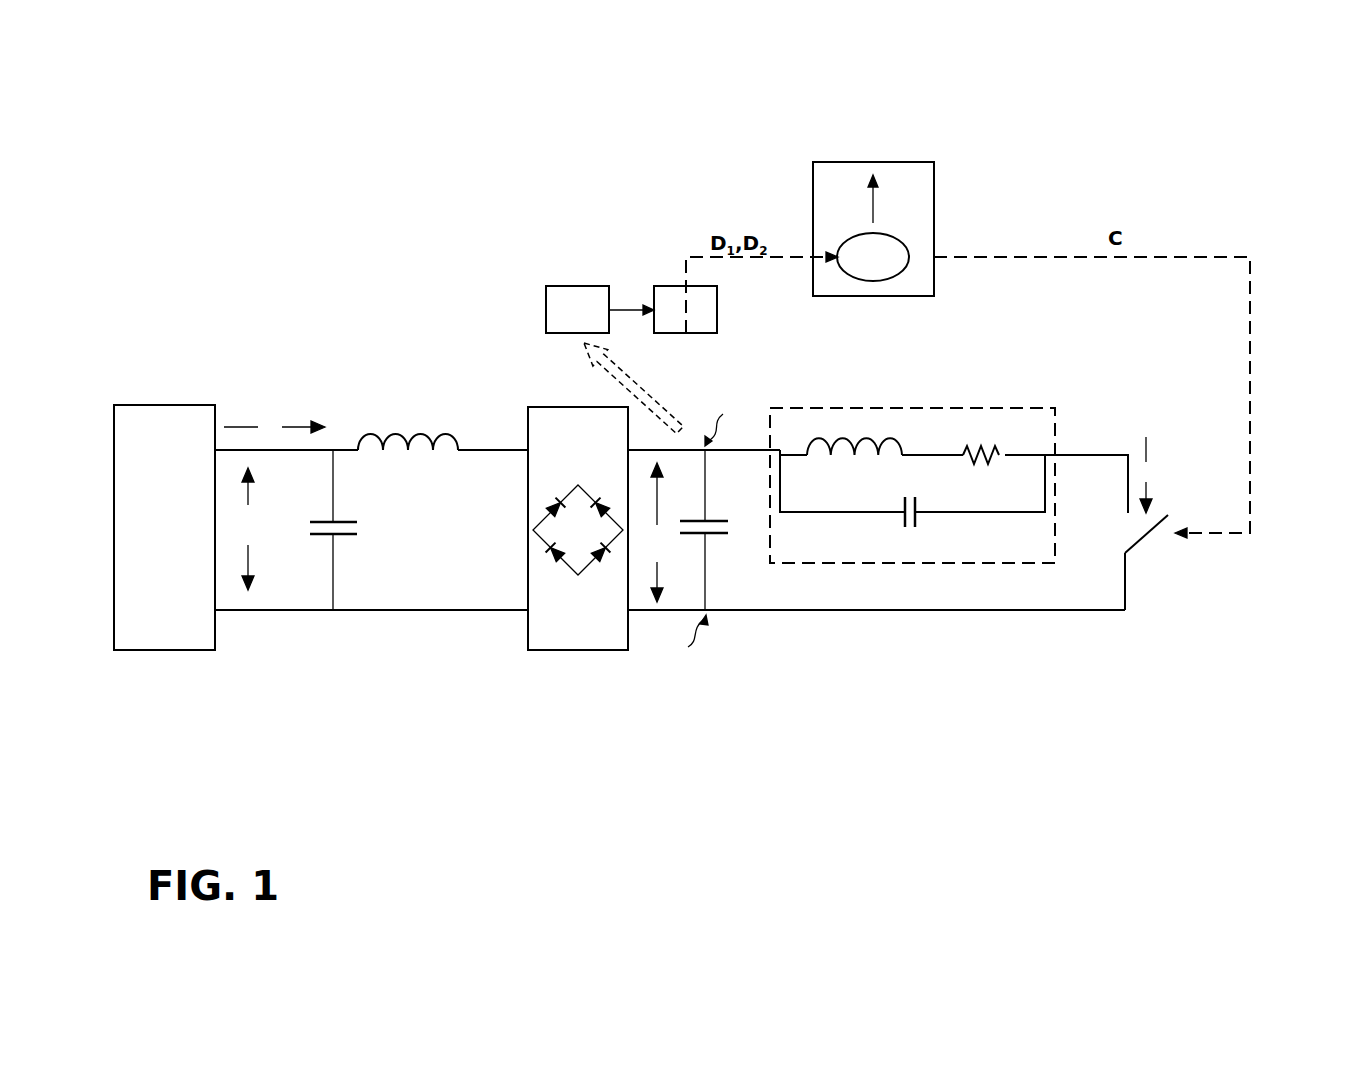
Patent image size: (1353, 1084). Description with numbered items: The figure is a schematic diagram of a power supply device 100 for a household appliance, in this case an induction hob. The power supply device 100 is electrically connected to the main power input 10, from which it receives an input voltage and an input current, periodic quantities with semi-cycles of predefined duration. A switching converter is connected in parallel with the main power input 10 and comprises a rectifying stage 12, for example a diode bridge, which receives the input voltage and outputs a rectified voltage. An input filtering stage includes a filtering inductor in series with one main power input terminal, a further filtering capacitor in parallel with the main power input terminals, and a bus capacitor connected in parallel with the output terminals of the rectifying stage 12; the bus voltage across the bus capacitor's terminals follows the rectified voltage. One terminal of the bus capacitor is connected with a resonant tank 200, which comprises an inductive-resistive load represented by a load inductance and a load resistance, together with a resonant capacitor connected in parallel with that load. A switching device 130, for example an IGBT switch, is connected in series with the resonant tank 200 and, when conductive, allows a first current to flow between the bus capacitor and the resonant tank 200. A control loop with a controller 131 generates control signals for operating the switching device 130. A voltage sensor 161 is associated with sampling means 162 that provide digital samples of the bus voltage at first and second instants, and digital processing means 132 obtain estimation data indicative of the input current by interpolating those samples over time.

The main power input 10 is at (170, 676).
The rectifying stage 12 is at (562, 674).
The power supply device 100 is at (799, 691).
The switching device 130 is at (1160, 573).
The controller 131 is at (921, 223).
The digital processing means 132 is at (873, 257).
The voltage sensor 161 is at (577, 309).
The sampling means 162 is at (663, 309).
The resonant tank 200 is at (1060, 390).